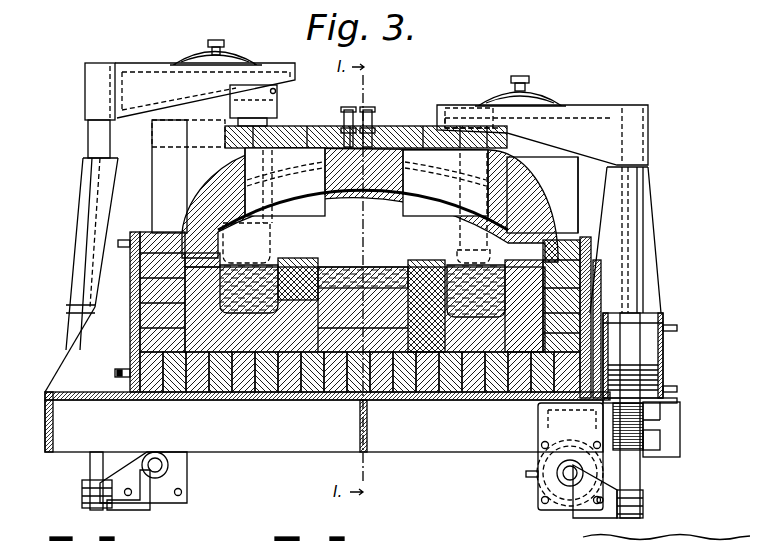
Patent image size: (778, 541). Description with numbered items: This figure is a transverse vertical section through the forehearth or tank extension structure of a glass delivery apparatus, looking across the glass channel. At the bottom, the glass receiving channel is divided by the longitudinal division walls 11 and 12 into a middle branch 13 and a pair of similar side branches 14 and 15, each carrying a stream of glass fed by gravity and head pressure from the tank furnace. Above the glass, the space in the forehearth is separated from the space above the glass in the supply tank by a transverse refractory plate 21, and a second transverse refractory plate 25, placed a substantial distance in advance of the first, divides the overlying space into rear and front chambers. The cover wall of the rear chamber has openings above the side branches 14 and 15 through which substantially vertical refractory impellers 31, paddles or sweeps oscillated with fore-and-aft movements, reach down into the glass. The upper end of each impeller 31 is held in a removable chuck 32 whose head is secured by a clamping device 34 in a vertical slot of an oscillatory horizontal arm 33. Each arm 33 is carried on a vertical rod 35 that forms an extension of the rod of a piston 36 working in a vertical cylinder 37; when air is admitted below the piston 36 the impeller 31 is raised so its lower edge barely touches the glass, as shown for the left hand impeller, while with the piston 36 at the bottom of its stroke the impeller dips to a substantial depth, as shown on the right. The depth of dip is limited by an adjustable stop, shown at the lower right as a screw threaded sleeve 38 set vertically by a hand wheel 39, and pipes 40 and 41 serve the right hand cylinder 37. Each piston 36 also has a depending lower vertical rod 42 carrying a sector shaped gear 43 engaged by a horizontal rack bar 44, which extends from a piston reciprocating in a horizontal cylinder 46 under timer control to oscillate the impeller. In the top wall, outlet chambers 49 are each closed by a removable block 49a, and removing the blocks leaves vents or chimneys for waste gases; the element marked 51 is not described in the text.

The longitudinal division wall 11 is at (305, 262).
The longitudinal division wall 12 is at (420, 266).
The middle branch 13 is at (388, 268).
The side branch 14 is at (262, 265).
The side branch 15 is at (462, 265).
The transverse refractory plate 21 is at (563, 202).
The transverse refractory plate 25 is at (318, 216).
The refractory impeller 31 is at (272, 226).
The chuck 32 is at (262, 110).
The oscillatory horizontal arm 33 is at (143, 78).
The clamping device 34 is at (240, 57).
The vertical rod 35 is at (100, 140).
The piston 36 is at (647, 373).
The vertical cylinder 37 is at (643, 367).
The screw threaded sleeve 38 is at (645, 438).
The hand wheel 39 is at (665, 422).
The pipe 40 is at (672, 388).
The pipe 41 is at (670, 326).
The lower vertical rod 42 is at (632, 482).
The sector shaped gear 43 is at (590, 519).
The horizontal rack bar 44 is at (560, 478).
The horizontal cylinder 46 is at (550, 468).
The outlet chamber 49 is at (247, 161).
The removable block 49a is at (290, 132).
The floor 51 is at (716, 537).